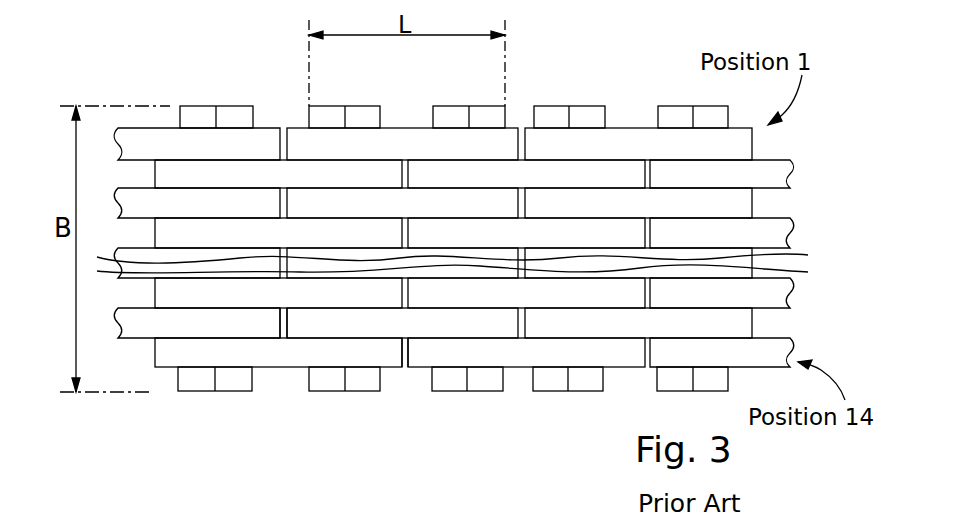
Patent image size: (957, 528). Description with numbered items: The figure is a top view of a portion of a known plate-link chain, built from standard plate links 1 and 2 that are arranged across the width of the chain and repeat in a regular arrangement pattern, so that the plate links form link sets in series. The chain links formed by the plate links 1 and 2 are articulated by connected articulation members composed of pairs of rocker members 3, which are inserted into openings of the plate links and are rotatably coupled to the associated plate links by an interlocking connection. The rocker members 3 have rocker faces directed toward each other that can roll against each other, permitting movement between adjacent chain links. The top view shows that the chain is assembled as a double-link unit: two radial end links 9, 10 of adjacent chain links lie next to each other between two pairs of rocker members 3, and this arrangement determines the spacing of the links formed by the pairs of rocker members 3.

The plate link 1 is at (252, 173).
The plate link 2 is at (405, 143).
The rocker member 3 is at (553, 378).
The radial end link 9 is at (388, 352).
The radial end link 10 is at (262, 322).